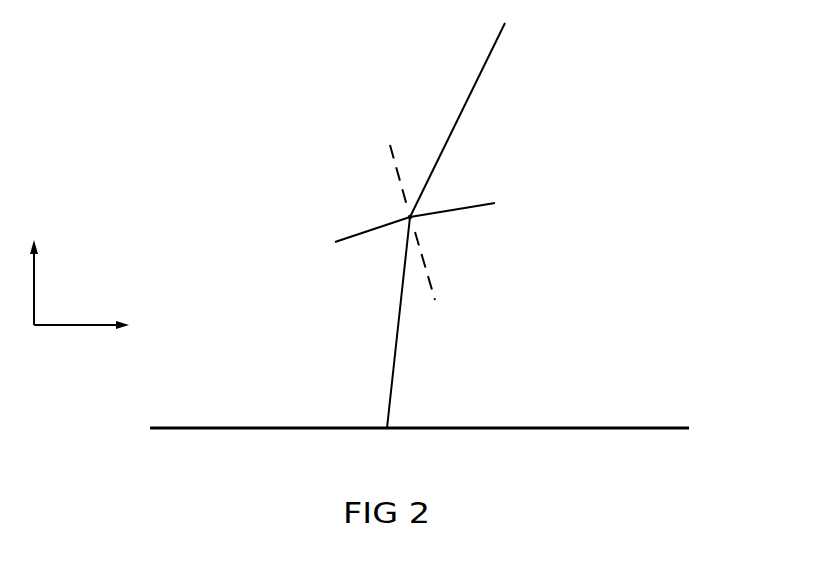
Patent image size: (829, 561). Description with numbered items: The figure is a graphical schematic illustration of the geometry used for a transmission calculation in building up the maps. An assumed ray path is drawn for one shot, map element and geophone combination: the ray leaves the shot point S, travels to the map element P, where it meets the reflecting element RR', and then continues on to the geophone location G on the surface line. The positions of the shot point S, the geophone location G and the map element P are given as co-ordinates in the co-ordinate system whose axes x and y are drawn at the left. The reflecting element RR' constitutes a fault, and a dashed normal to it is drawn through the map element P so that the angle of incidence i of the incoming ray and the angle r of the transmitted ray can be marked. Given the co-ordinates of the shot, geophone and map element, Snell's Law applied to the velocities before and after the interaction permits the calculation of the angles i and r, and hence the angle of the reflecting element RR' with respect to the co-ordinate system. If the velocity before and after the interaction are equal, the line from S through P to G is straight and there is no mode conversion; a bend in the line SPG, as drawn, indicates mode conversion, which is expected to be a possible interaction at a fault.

The geophone location G is at (419, 447).
The shot point S is at (468, 114).
The reflecting element end R is at (360, 238).
The reflecting element end R' is at (464, 203).
The angle of refraction r is at (411, 322).
The angle of incidence i is at (404, 175).
The map element P is at (404, 193).
The x co-ordinate x is at (90, 319).
The y co-ordinate y is at (35, 264).